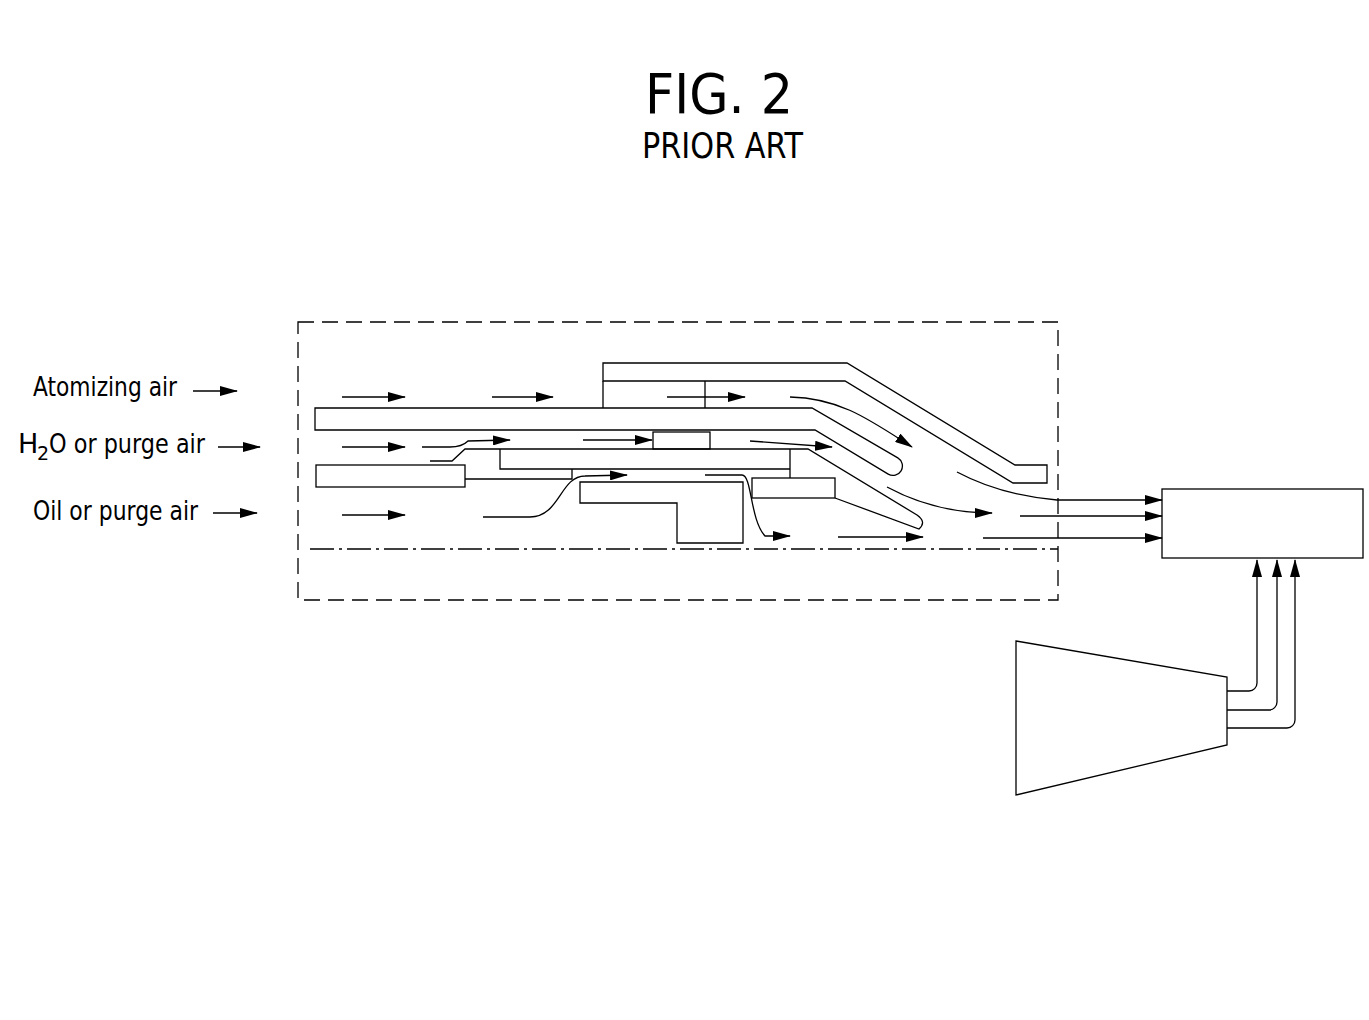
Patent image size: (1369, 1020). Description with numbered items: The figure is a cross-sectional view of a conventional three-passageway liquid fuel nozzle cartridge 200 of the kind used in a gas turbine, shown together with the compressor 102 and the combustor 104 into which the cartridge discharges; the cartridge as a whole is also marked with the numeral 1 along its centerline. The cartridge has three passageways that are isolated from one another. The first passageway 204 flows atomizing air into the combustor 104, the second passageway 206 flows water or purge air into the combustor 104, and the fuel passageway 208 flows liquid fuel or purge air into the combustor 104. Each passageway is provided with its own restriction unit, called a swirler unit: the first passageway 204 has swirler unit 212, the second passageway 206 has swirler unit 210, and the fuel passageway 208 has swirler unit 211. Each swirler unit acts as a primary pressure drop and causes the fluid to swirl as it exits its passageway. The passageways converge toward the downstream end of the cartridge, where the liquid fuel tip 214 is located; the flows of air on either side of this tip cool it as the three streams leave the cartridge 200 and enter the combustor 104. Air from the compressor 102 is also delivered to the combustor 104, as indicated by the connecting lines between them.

The fuel nozzle 1 is at (450, 535).
The compressor 102 is at (1085, 780).
The combustor 104 is at (1227, 488).
The liquid fuel nozzle cartridge 200 is at (874, 312).
The first passageway 204 is at (332, 395).
The second passageway 206 is at (330, 447).
The fuel passageway 208 is at (330, 515).
The swirler unit 210 is at (677, 440).
The swirler unit 211 is at (640, 492).
The swirler unit 212 is at (619, 392).
The liquid fuel tip 214 is at (927, 523).